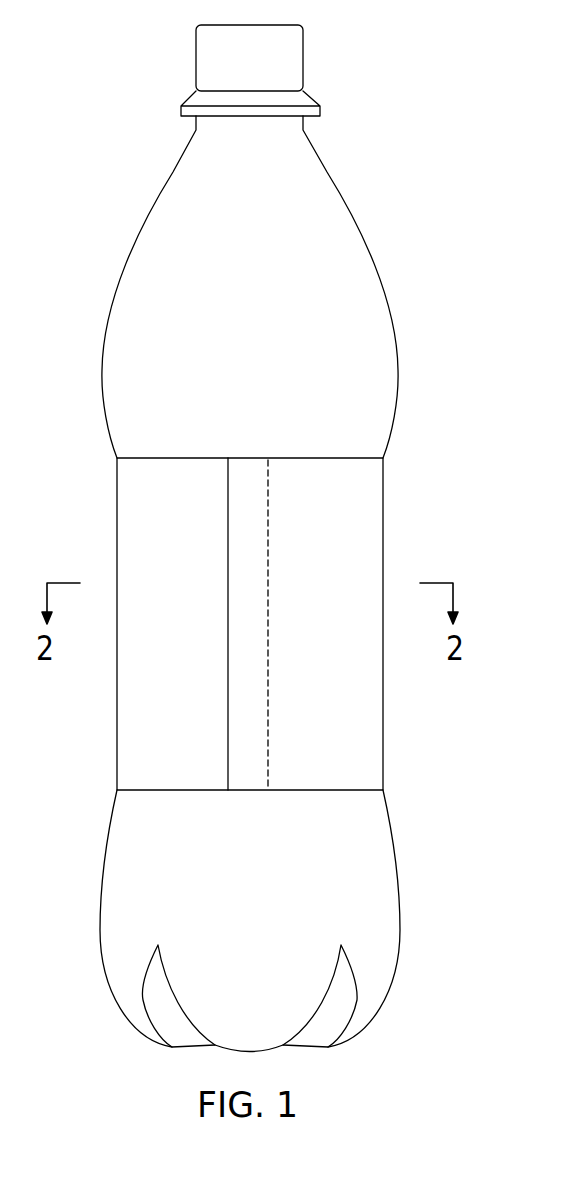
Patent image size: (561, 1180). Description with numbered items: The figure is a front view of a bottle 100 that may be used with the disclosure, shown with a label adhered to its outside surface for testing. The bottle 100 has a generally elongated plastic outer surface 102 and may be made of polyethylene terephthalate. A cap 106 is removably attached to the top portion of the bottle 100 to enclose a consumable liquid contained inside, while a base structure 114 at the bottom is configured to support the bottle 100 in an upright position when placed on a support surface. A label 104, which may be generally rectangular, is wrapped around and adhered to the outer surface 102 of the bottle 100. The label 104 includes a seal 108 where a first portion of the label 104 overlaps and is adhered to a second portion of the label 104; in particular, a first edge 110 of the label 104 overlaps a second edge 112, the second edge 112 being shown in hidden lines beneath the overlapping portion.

The bottle 100 is at (417, 115).
The outer surface 102 is at (142, 260).
The label 104 is at (152, 742).
The cap 106 is at (208, 57).
The seal 108 is at (252, 470).
The first edge 110 is at (229, 535).
The second edge 112 is at (268, 557).
The base structure 114 is at (252, 988).